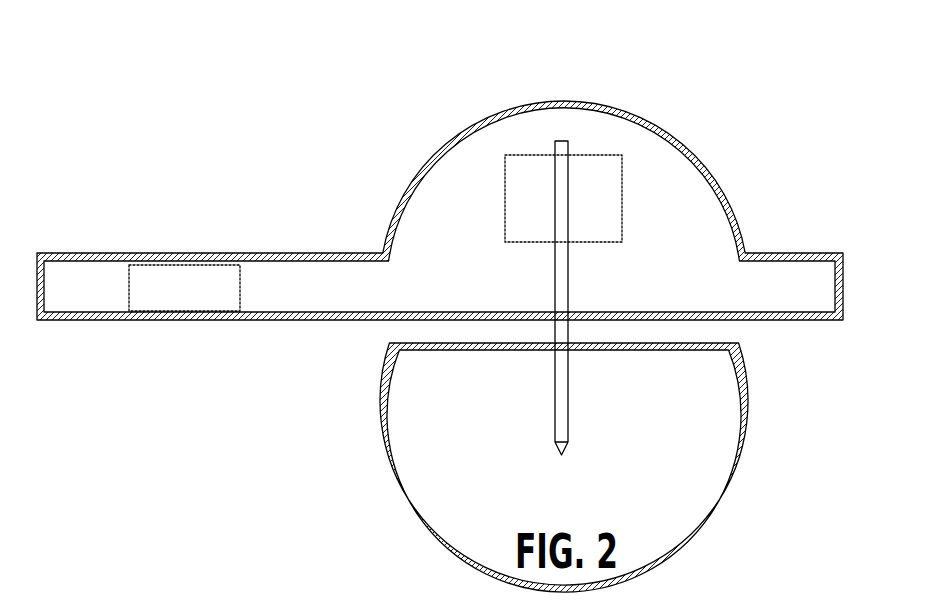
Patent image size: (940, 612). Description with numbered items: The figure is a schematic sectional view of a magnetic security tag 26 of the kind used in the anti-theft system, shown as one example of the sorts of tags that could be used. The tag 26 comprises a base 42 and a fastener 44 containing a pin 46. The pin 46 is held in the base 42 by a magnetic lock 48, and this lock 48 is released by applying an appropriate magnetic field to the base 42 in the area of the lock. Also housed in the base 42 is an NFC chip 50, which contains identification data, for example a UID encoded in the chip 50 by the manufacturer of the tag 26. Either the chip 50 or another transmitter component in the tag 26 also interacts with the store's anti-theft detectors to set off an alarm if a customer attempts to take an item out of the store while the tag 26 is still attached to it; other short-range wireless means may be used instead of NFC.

The security tag 26 is at (777, 66).
The base 42 is at (845, 278).
The fastener 44 is at (708, 398).
The pin 46 is at (555, 398).
The magnetic lock 48 is at (622, 190).
The NFC chip 50 is at (180, 259).